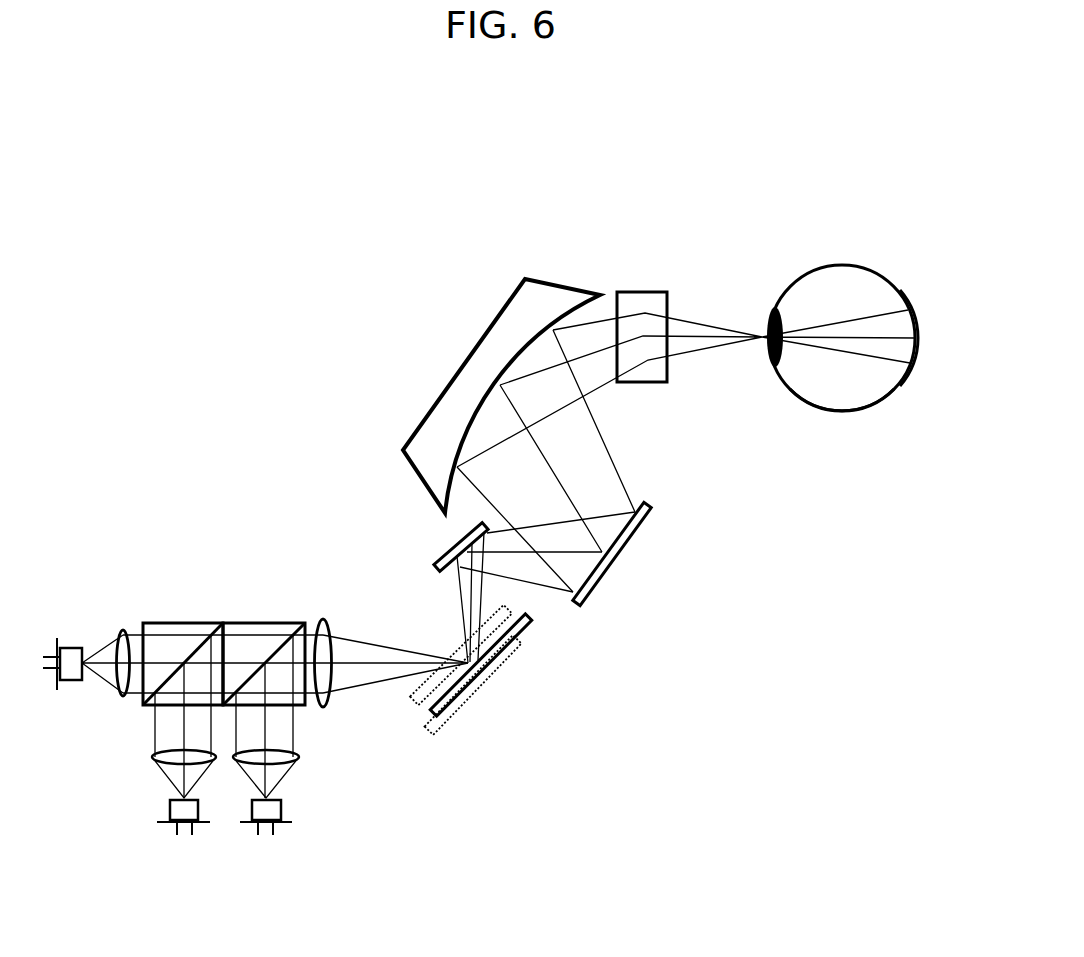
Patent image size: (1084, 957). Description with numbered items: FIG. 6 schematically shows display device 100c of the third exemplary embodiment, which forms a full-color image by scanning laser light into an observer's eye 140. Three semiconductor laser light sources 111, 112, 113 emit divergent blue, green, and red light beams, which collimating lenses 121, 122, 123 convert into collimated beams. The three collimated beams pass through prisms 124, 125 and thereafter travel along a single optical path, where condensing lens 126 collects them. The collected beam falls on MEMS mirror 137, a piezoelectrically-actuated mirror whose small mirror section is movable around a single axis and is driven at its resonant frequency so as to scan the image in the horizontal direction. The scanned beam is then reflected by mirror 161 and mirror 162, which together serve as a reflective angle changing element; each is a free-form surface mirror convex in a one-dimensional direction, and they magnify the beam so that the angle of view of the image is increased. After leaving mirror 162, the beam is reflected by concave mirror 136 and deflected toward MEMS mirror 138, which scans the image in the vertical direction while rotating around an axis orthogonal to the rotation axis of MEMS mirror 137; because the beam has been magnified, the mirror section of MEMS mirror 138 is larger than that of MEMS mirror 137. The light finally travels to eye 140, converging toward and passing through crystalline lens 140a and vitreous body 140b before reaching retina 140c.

The display device 100c is at (277, 320).
The light source 111 is at (72, 680).
The light source 112 is at (167, 822).
The light source 113 is at (250, 823).
The collimating lens 121 is at (126, 632).
The collimating lens 122 is at (152, 757).
The collimating lens 123 is at (298, 758).
The prism 124 is at (188, 622).
The prism 125 is at (275, 622).
The condensing lens 126 is at (325, 707).
The concave mirror 136 is at (427, 420).
The MEMS mirror 137 is at (435, 723).
The MEMS mirror 138 is at (638, 292).
The eye 140 is at (836, 252).
The crystalline lens 140a is at (772, 365).
The vitreous body 140b is at (843, 402).
The retina 140c is at (910, 363).
The mirror 161 is at (455, 545).
The mirror 162 is at (608, 567).